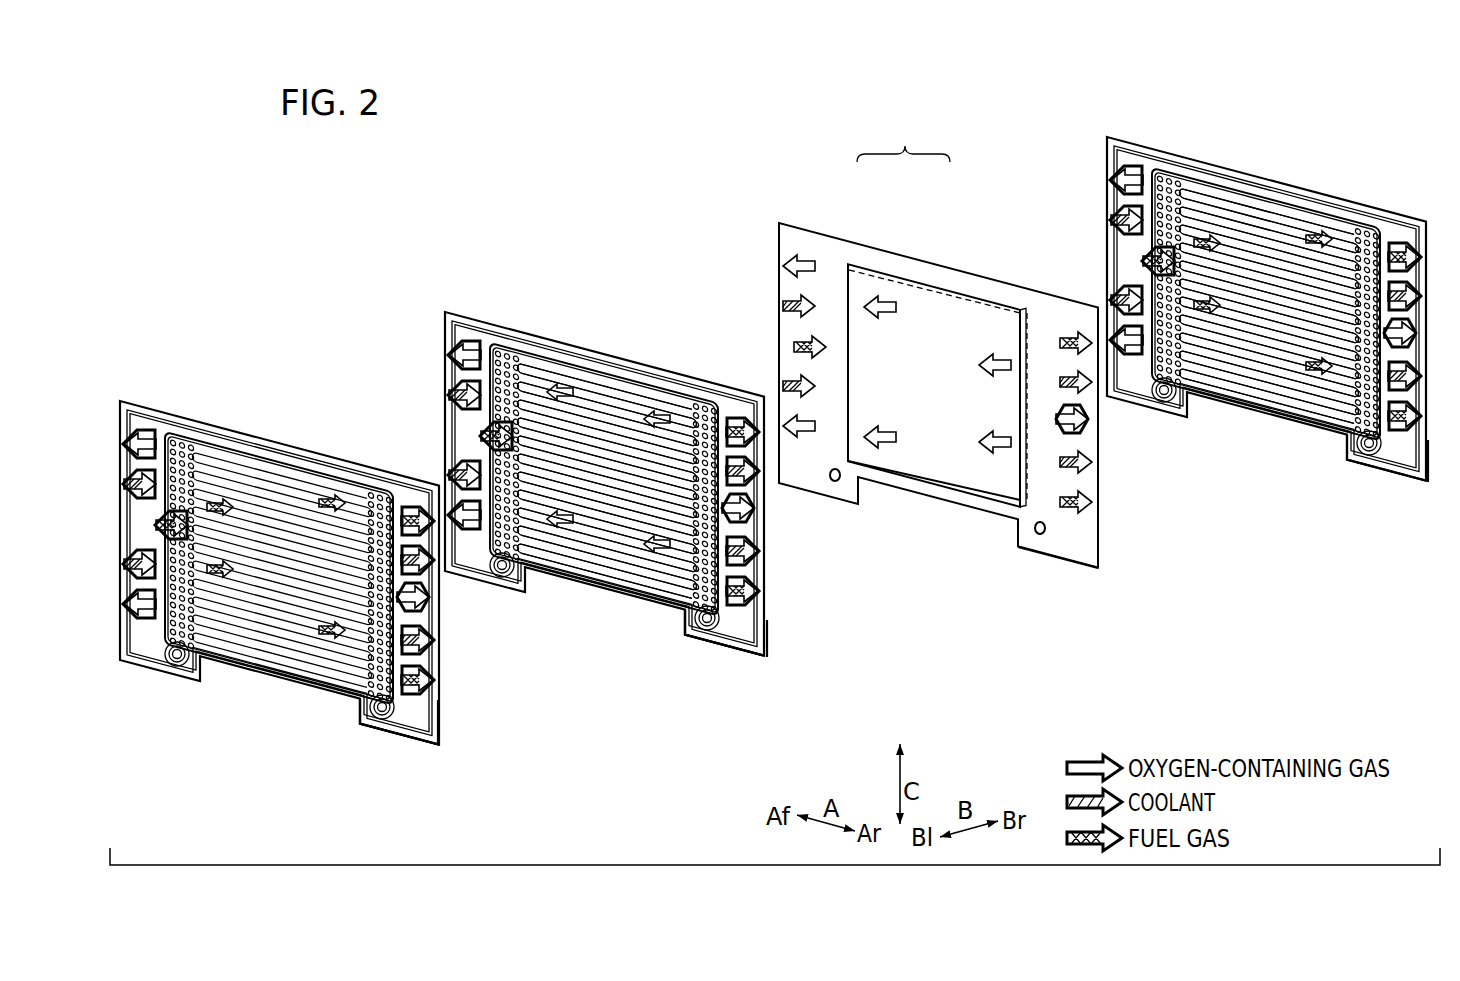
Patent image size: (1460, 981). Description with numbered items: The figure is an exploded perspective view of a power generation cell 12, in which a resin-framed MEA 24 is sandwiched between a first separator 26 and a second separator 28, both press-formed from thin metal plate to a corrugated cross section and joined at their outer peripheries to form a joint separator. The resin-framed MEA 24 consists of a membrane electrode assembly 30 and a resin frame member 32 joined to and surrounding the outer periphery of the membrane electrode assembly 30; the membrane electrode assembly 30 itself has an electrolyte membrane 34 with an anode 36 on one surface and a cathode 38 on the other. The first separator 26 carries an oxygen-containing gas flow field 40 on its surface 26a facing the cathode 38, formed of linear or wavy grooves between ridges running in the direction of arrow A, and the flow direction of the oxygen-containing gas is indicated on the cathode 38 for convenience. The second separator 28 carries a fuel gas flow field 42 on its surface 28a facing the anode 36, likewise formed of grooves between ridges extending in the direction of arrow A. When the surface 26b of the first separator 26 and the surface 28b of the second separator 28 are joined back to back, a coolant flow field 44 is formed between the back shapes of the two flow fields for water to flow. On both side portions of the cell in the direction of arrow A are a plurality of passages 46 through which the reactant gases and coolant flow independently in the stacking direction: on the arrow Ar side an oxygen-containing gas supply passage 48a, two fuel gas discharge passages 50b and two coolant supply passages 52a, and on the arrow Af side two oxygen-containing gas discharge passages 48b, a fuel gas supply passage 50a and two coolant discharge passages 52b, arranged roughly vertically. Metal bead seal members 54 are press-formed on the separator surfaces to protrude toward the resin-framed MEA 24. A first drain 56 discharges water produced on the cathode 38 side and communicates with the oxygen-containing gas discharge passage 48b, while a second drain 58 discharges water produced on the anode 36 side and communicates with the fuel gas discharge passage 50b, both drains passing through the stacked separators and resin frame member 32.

The power generation cell 12 is at (742, 215).
The resin-framed MEA 24 is at (903, 144).
The first separator 26 is at (445, 314).
The surface of the first separator 26a is at (759, 660).
The surface of the first separator 26b is at (742, 636).
The second separator 28 is at (240, 430).
The surface of the second separator 28a is at (416, 718).
The surface of the second separator 28b is at (431, 748).
The membrane electrode assembly 30 is at (931, 280).
The resin frame member 32 is at (848, 258).
The electrolyte membrane 34 is at (952, 470).
The anode 36 is at (890, 268).
The cathode 38 is at (932, 468).
The oxygen-containing gas flow field 40 is at (632, 415).
The fuel gas flow field 42 is at (270, 612).
The coolant flow field 44 is at (588, 398).
The passages 46 is at (400, 702).
The oxygen-containing gas supply passage 48a is at (430, 604).
The oxygen-containing gas discharge passage 48b is at (147, 432).
The fuel gas supply passage 50a is at (176, 536).
The fuel gas discharge passage 50b is at (410, 514).
The coolant supply passage 52a is at (427, 650).
The coolant discharge passage 52b is at (158, 480).
The seal member 54 is at (1190, 230).
The first drain 56 is at (177, 665).
The second drain 58 is at (372, 707).